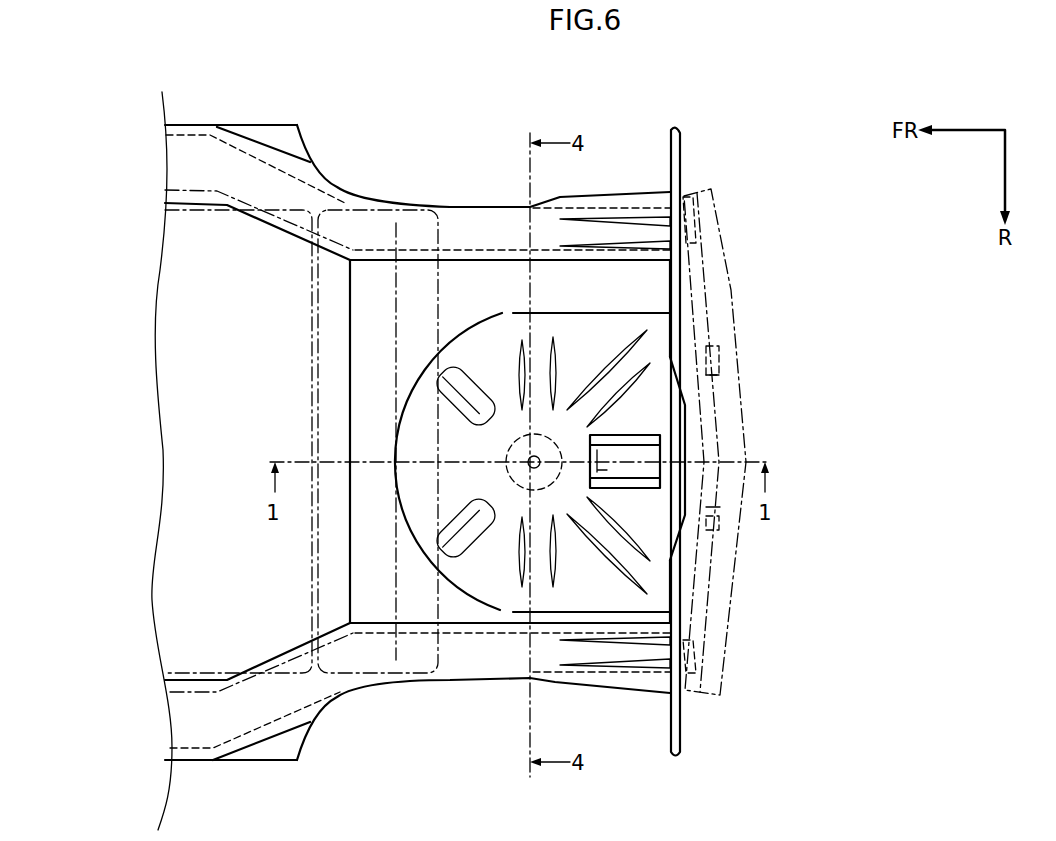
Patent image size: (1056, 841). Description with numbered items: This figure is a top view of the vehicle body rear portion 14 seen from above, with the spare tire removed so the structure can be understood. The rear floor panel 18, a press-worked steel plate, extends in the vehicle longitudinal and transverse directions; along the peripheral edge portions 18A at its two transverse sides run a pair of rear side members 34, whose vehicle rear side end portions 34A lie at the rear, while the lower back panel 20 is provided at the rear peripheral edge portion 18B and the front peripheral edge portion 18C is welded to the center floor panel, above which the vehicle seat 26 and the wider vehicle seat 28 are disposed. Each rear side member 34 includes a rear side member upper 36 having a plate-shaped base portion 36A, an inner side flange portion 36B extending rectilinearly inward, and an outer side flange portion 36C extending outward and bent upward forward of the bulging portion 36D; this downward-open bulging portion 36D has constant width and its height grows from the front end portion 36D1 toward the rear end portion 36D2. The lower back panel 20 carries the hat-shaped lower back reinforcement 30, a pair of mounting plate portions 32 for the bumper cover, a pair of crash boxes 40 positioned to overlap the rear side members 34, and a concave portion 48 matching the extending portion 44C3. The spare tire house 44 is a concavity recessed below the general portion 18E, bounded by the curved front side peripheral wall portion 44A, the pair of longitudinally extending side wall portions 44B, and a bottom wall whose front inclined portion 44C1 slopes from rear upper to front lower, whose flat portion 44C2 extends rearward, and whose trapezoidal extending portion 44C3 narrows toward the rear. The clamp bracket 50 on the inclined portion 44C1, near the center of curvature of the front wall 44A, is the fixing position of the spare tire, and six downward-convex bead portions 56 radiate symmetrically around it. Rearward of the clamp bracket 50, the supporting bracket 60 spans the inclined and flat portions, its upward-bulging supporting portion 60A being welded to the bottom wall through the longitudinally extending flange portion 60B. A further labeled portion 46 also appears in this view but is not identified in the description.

The vehicle body rear portion 14 is at (710, 95).
The rear floor panel 18 is at (518, 130).
The peripheral edge portions 18A is at (463, 243).
The peripheral edge portion 18B is at (660, 592).
The peripheral edge portion 18C is at (362, 618).
The general portion 18E is at (562, 293).
The lower back panel 20 is at (683, 158).
The vehicle seat 26 is at (345, 660).
The vehicle seat 28 is at (367, 223).
The lower back reinforcement 30 is at (667, 180).
The mounting plate portions 32 is at (717, 353).
The rear side members 34 is at (605, 138).
The vehicle rear side end portions 34A is at (658, 227).
The rear side member upper 36 is at (190, 758).
The base portion 36A is at (200, 712).
The inner side flange portion 36B is at (257, 677).
The outer side flange portion 36C is at (260, 730).
The bulging portion 36D is at (606, 205).
The end portion 36D1 is at (542, 223).
The end portion 36D2 is at (688, 215).
The crash box 40 is at (700, 233).
The spare tire house 44 is at (459, 287).
The front side peripheral wall portion 44A is at (460, 593).
The side wall portions 44B is at (580, 314).
The inclined portion 44C1 is at (400, 405).
The flat portion 44C2 is at (640, 353).
The extending portion 44C3 is at (677, 400).
The weld portion 46 is at (675, 450).
The concave portion 48 is at (683, 412).
The clamp bracket 50 is at (528, 454).
The bead portions 56 is at (540, 360).
The supporting bracket 60 is at (656, 498).
The supporting portion 60A is at (590, 474).
The flange portion 60B is at (590, 428).